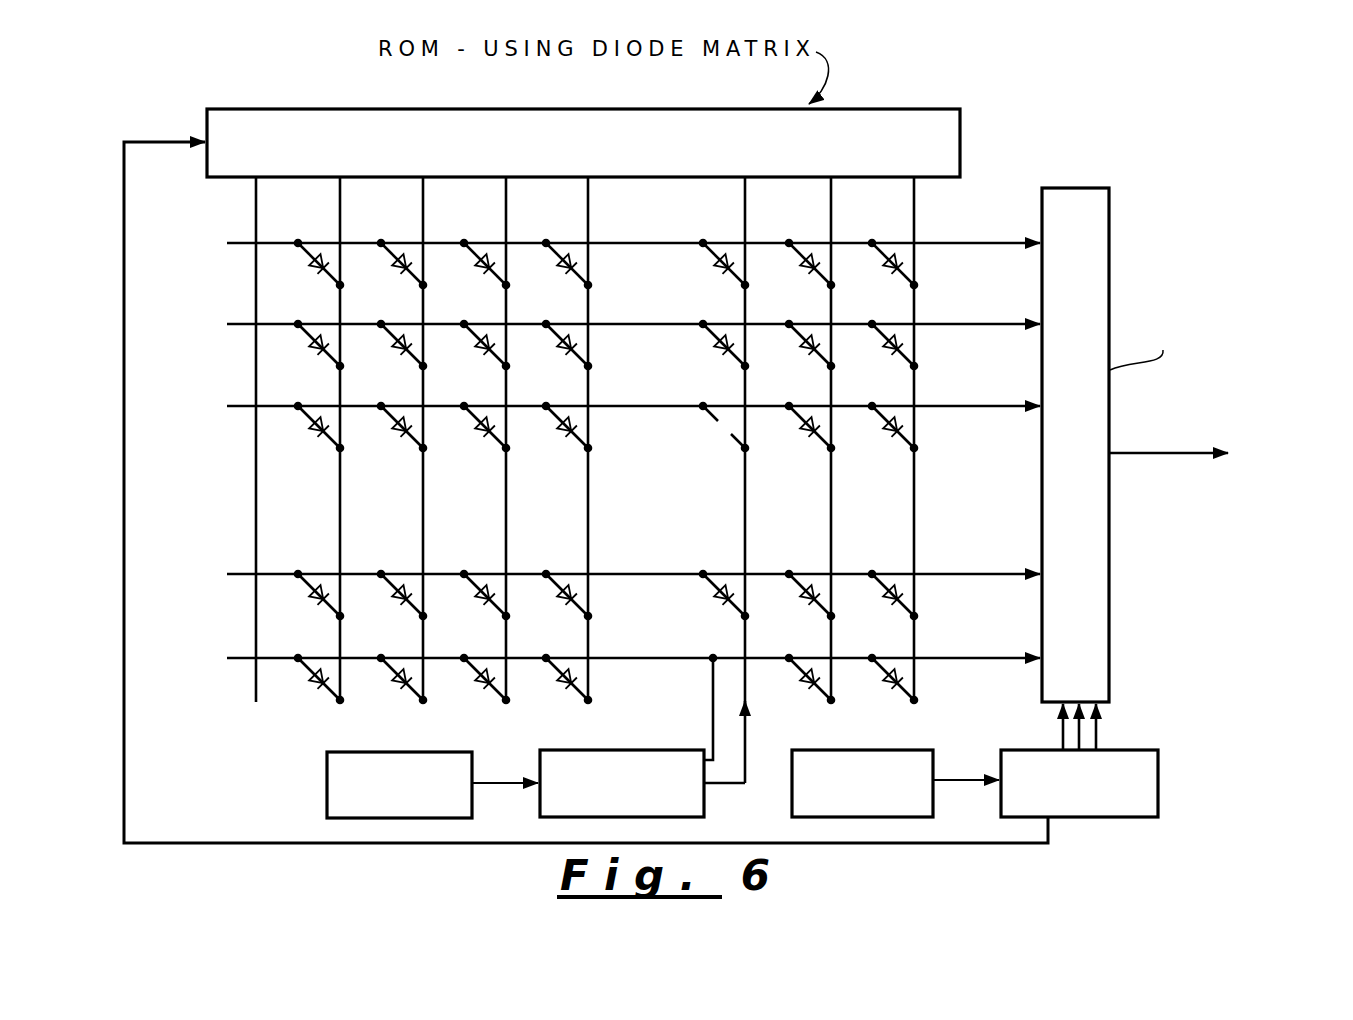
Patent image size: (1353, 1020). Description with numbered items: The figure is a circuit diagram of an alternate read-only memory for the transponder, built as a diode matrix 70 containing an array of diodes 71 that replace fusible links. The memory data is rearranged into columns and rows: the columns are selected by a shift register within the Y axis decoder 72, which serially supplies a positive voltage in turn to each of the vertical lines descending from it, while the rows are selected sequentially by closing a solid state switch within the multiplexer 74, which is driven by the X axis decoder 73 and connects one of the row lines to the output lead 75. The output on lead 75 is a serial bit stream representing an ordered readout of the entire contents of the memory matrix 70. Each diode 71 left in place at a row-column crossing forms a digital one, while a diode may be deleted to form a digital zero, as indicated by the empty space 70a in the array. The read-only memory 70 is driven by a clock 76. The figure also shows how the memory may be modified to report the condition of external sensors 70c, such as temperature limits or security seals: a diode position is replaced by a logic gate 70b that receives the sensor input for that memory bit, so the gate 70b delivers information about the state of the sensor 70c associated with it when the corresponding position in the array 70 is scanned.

The diode matrix 70 is at (231, 380).
The space 70a is at (711, 418).
The logic gate 70b is at (585, 750).
The external sensor 70c is at (385, 752).
The diode 71 is at (597, 478).
The Y axis decoder 72 is at (493, 108).
The X axis decoder 73 is at (1120, 750).
The multiplexer 74 is at (1110, 298).
The lead 75 is at (1125, 453).
The clock 76 is at (860, 750).